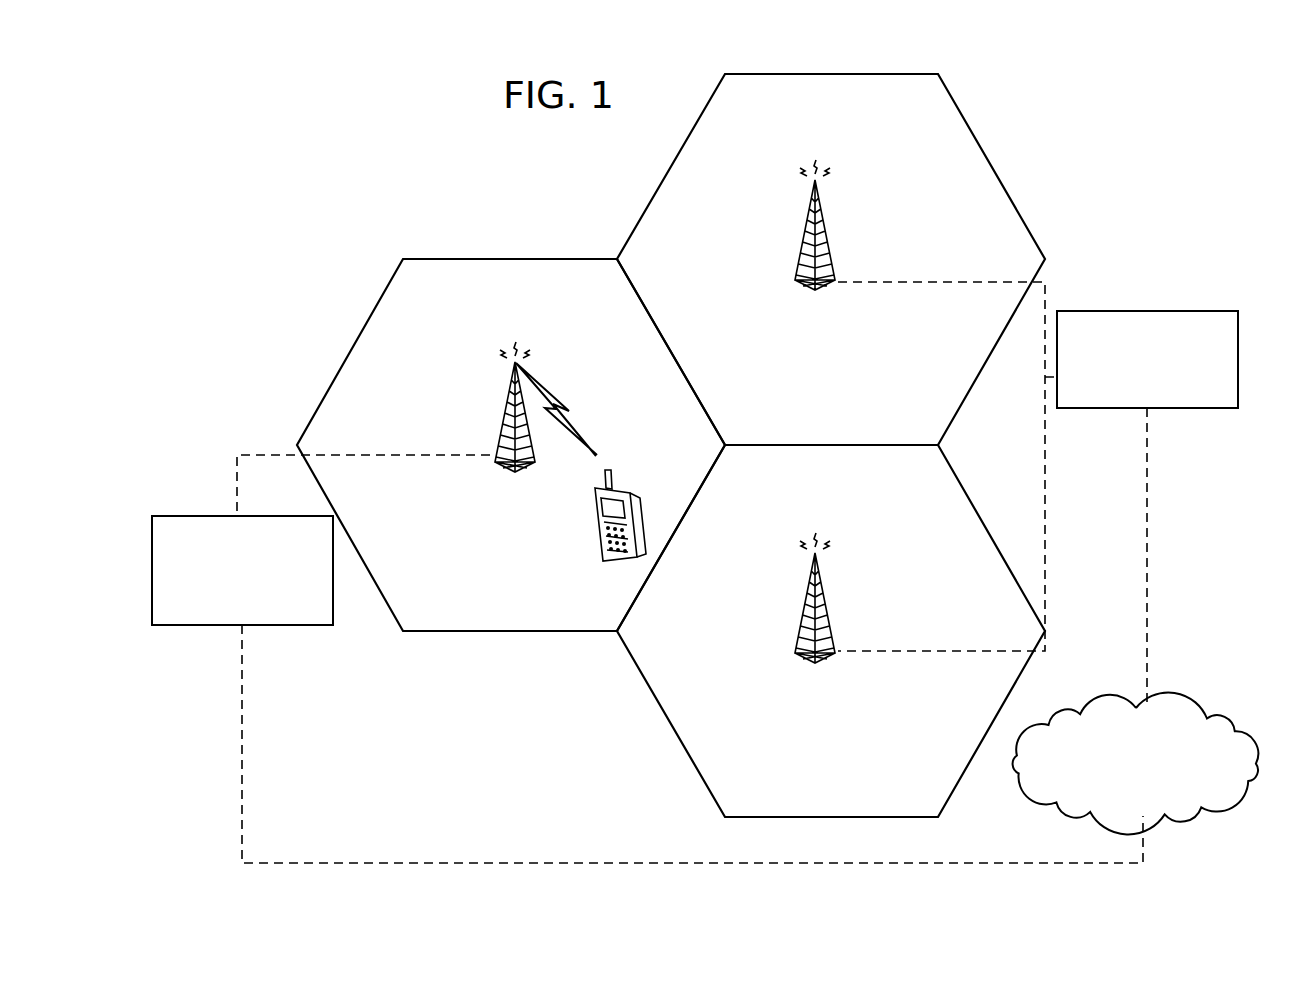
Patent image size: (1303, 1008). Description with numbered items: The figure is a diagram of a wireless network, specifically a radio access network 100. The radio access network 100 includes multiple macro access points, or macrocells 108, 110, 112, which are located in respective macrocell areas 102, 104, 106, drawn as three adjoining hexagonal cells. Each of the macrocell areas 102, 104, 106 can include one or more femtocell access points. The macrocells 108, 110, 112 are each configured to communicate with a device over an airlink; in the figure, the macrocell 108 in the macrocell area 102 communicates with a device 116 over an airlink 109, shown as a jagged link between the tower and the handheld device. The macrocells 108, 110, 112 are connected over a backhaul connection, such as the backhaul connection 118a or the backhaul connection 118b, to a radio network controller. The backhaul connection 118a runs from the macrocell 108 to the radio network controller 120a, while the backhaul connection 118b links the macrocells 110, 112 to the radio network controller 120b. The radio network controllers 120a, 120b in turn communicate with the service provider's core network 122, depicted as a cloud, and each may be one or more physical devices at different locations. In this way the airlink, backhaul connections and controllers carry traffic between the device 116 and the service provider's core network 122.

The radio access network 100 is at (447, 152).
The macrocell area 102 is at (352, 332).
The macrocell area 104 is at (978, 130).
The macrocell area 106 is at (647, 727).
The macrocell 108 is at (500, 464).
The airlink 109 is at (558, 404).
The macrocell 110 is at (805, 290).
The macrocell 112 is at (805, 673).
The device 116 is at (593, 545).
The backhaul connection 118a is at (237, 468).
The backhaul connection 118b is at (1045, 562).
The radio network controller 120a is at (242, 570).
The radio network controller 120b is at (1147, 359).
The service provider's core network 122 is at (1138, 698).